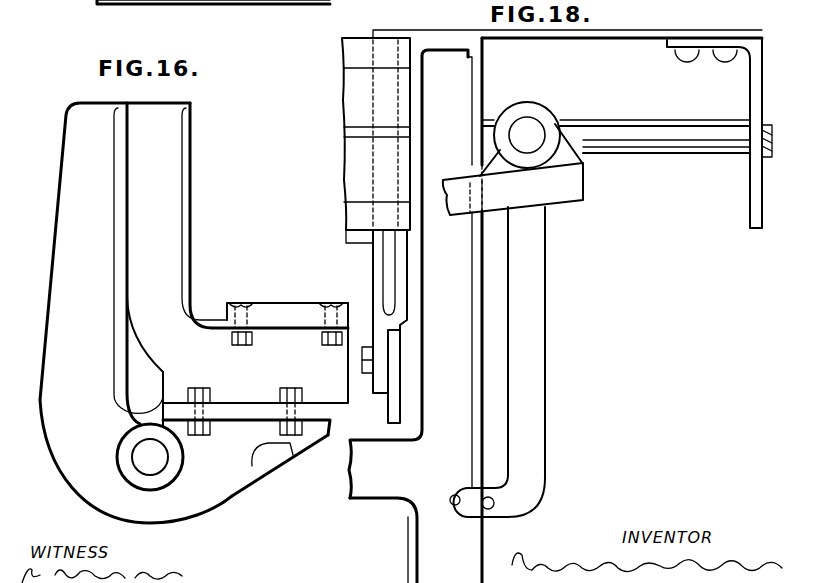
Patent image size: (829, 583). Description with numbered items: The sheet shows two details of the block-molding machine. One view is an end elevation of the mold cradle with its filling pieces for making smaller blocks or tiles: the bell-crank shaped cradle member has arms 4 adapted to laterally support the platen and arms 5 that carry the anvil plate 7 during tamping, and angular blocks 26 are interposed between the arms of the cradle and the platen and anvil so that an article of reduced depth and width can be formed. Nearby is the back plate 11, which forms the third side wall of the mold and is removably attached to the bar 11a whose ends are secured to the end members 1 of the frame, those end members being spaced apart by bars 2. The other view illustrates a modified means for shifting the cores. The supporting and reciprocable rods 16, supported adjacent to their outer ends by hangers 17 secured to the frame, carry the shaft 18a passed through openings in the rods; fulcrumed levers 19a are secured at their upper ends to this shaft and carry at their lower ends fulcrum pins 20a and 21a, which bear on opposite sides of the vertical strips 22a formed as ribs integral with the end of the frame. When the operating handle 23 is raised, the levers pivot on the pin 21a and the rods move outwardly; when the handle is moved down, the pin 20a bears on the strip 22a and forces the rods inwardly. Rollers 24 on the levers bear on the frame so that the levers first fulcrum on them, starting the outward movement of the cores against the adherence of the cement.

In FIG. 18, the end members 1 is at (412, 572).
In FIG. 18, the bars 2 is at (380, 486).
In FIG. 16, the arms 4 is at (70, 222).
In FIG. 16, the arms 5 is at (222, 483).
In FIG. 16, the anvil plate 7 is at (285, 303).
In FIG. 18, the anvil plate 7 is at (345, 236).
In FIG. 18, the back plate 11 is at (380, 273).
In FIG. 18, the bar 11a is at (397, 402).
In FIG. 18, the supporting and reciprocable rods 16 is at (645, 114).
In FIG. 18, the hangers 17 is at (750, 97).
In FIG. 18, the shaft 18a is at (527, 135).
In FIG. 18, the fulcrumed levers 19a is at (530, 313).
In FIG. 18, the fulcrum pin 20a is at (455, 496).
In FIG. 18, the fulcrum pin 21a is at (494, 502).
In FIG. 18, the vertical strips 22a is at (482, 405).
In FIG. 18, the operating handle 23 is at (510, 192).
In FIG. 18, the rollers 24 is at (562, 153).
In FIG. 16, the angular blocks 26 is at (160, 203).